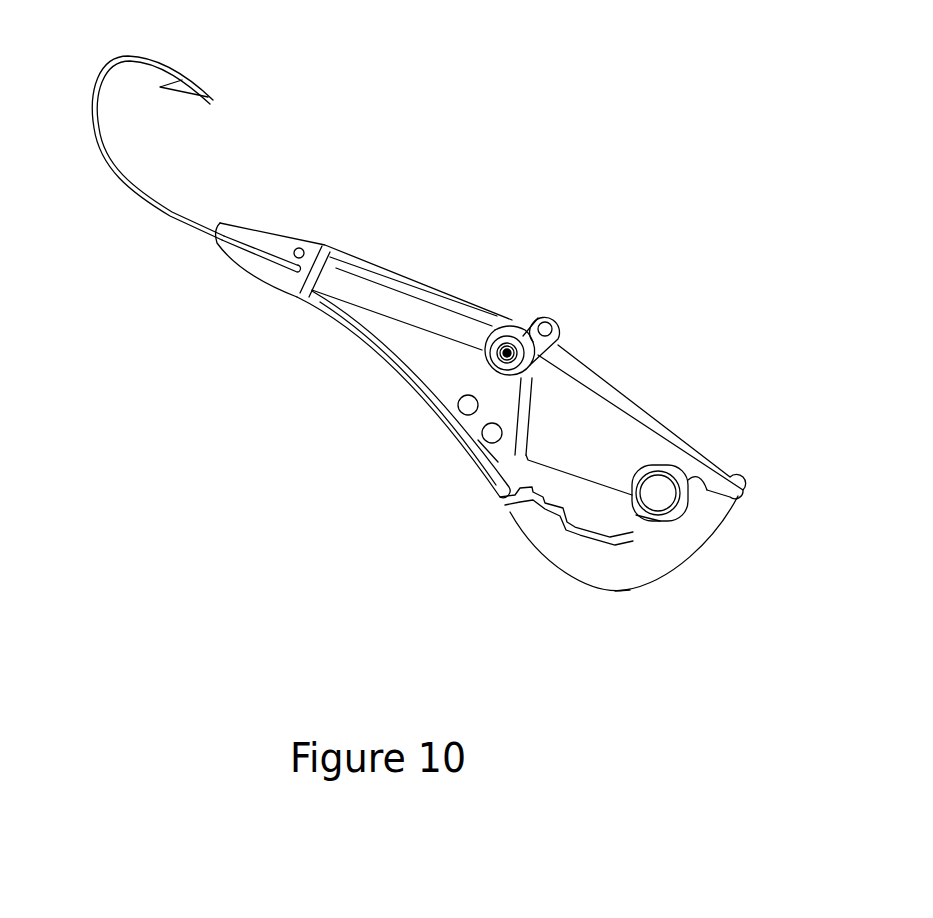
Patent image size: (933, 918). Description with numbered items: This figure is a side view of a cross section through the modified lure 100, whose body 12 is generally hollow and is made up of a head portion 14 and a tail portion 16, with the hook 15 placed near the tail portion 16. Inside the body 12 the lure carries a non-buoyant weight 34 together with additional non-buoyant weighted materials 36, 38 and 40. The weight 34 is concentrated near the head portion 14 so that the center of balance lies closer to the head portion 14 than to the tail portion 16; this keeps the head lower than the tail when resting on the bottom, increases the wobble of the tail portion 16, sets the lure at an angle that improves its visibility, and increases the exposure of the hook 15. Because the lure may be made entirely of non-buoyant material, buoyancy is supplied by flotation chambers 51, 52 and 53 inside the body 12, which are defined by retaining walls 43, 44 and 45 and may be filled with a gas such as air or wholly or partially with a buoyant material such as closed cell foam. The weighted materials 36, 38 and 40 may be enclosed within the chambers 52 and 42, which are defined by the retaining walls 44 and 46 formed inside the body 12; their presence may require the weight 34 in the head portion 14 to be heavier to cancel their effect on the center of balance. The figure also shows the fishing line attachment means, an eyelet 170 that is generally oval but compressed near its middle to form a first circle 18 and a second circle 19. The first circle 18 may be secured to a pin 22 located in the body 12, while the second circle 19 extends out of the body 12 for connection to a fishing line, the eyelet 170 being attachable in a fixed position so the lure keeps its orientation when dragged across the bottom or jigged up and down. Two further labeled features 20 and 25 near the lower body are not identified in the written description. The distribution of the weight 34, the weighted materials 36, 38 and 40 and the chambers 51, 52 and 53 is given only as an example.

The lure 100 is at (528, 203).
The hook 15 is at (105, 137).
The retaining wall 45 is at (350, 330).
The tail portion 16 is at (387, 258).
The flotation chamber 53 is at (423, 305).
The body 12 is at (447, 385).
The weighted material 36 is at (497, 408).
The flotation chamber 52 is at (490, 438).
The weighted material 38 is at (493, 440).
The first circle 18 is at (532, 358).
The pin 22 is at (494, 313).
The second circle 19 is at (562, 331).
The eyelet 170 is at (560, 313).
The head portion 14 is at (663, 415).
The flotation chamber 51 is at (600, 457).
The retaining wall 44 is at (505, 465).
The weight 34 is at (557, 490).
The lower body 20 is at (613, 562).
The bottom edge 25 is at (623, 592).
The weighted material 40 is at (723, 473).
The retaining wall 46 is at (683, 503).
The chamber 42 is at (667, 523).
The retaining wall 43 is at (643, 523).